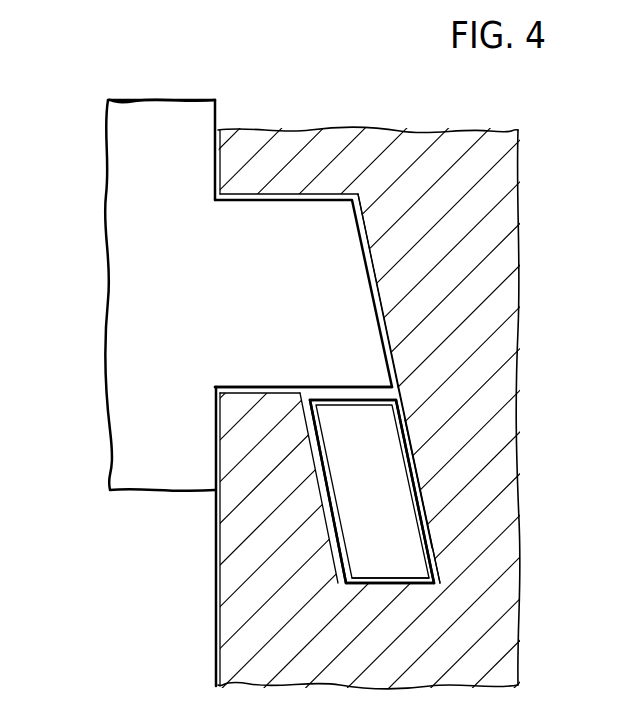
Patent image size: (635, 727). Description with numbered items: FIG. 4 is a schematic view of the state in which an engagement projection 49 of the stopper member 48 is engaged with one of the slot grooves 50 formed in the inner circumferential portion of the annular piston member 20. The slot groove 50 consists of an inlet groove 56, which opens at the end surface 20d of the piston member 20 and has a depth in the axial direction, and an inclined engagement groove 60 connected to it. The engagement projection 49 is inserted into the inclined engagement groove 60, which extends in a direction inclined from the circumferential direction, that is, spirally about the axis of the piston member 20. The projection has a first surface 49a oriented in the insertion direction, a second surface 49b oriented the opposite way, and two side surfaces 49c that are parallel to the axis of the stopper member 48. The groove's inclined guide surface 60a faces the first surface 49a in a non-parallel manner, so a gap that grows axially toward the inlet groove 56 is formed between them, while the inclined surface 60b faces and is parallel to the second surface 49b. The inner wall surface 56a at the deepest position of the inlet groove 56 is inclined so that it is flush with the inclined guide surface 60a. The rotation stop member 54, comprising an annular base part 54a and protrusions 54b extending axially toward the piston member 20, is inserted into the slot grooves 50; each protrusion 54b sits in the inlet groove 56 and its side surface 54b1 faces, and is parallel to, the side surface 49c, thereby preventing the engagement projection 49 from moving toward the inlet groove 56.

The piston member 20 is at (468, 128).
The end surface of the piston member 20d is at (216, 628).
The stopper member 48 is at (424, 496).
The engagement projection 49 is at (417, 580).
The first surface 49a is at (418, 478).
The second surface 49b is at (342, 550).
The side surface 49c is at (337, 398).
The slot groove 50 is at (588, 208).
The rotation stop member 54 is at (100, 256).
The annular base part 54a is at (168, 112).
The protrusion 54b is at (274, 232).
The side surface of the protrusion 54b1 is at (376, 388).
The inlet groove 56 is at (318, 201).
The inner wall surface 56a is at (380, 298).
The inclined engagement groove 60 is at (418, 452).
The inclined guide surface 60a is at (420, 508).
The inclined surface 60b is at (325, 483).